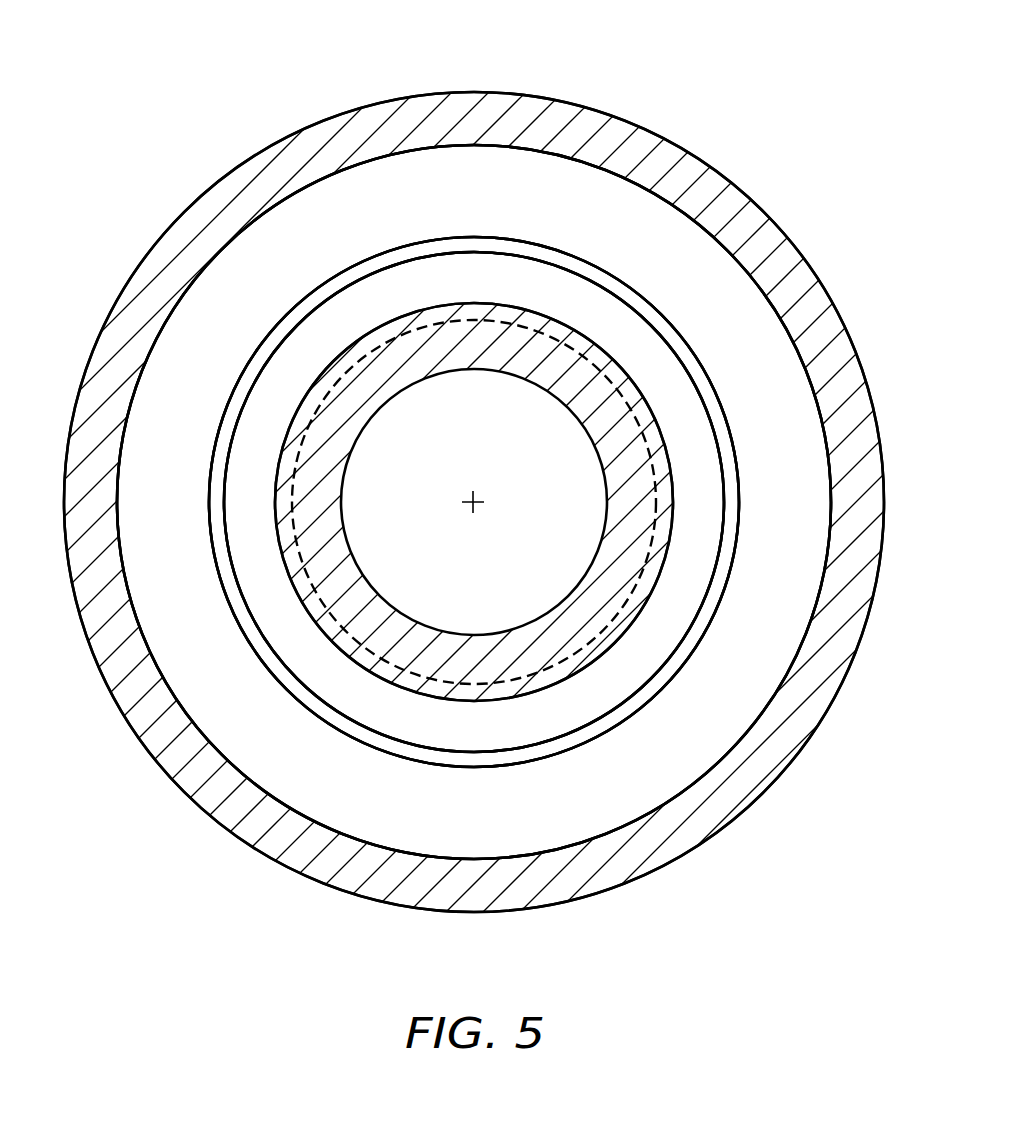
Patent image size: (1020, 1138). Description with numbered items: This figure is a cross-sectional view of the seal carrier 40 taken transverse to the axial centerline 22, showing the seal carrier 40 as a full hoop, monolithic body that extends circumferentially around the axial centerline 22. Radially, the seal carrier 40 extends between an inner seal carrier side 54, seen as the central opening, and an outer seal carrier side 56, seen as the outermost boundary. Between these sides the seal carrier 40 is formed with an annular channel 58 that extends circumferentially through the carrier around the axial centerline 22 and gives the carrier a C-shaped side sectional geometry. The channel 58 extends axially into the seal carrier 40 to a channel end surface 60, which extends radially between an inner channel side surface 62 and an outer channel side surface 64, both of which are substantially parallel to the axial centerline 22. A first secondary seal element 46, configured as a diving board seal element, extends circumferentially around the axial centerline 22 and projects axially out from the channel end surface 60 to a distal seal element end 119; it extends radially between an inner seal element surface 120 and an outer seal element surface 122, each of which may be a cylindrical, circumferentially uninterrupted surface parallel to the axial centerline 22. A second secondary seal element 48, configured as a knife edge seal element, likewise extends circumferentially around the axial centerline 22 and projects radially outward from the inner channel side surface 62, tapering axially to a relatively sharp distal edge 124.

The axial centerline 22 is at (476, 512).
The seal carrier 40 is at (763, 145).
The secondary seal element 46 is at (750, 496).
The secondary seal element 48 is at (664, 406).
The inner seal carrier side 54 is at (413, 381).
The outer seal carrier side 56 is at (384, 92).
The channel 58 is at (726, 286).
The channel end surface 60 is at (625, 227).
The inner channel side surface 62 is at (432, 303).
The outer channel side surface 64 is at (483, 146).
The distal seal element end 119 is at (212, 513).
The inner seal element surface 120 is at (243, 587).
The outer seal element surface 122 is at (213, 553).
The distal edge 124 is at (667, 443).